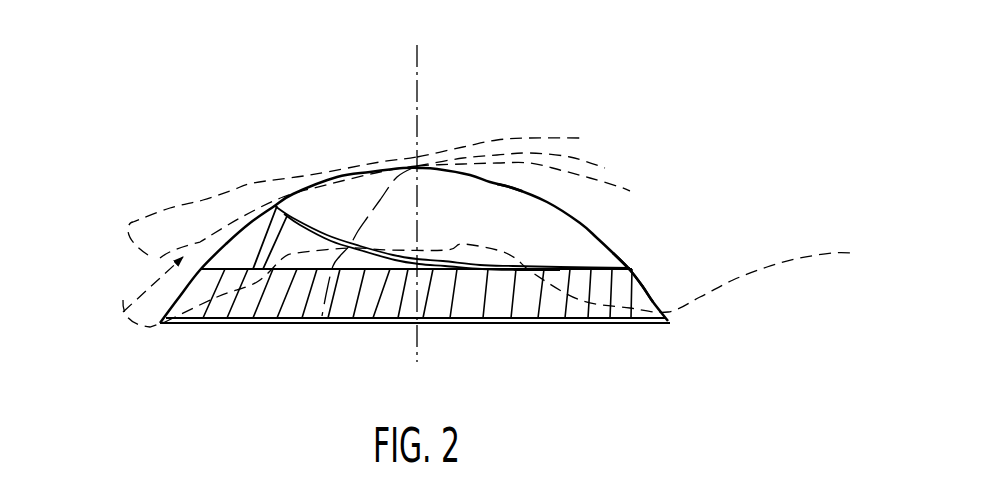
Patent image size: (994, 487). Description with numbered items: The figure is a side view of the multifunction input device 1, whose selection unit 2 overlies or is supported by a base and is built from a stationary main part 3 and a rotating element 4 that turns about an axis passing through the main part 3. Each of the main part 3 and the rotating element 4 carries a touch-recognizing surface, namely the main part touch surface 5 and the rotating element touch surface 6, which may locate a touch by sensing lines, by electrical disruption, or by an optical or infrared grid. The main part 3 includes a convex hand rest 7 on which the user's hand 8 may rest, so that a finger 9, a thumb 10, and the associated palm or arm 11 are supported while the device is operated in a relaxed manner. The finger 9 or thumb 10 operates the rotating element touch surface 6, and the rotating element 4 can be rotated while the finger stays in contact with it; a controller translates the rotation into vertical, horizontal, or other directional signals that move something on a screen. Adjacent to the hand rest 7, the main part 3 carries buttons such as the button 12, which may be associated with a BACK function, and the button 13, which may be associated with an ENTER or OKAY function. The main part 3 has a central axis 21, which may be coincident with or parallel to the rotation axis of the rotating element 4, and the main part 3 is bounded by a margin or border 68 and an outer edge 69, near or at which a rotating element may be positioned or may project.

The multifunction input device 1 is at (196, 394).
The selection unit 2 is at (167, 376).
The main part 3 is at (593, 181).
The rotating element 4 is at (234, 320).
The main part touch surface 5 is at (600, 213).
The rotating element touch surface 6 is at (282, 320).
The hand rest 7 is at (513, 184).
The user's hand 8 is at (580, 147).
The finger 9 is at (253, 211).
The thumb 10 is at (388, 321).
The palm or arm 11 is at (821, 268).
The button 12 is at (307, 270).
The button 13 is at (248, 249).
The central axis 21 is at (420, 54).
The margin or border 68 is at (626, 248).
The outer edge 69 is at (636, 262).